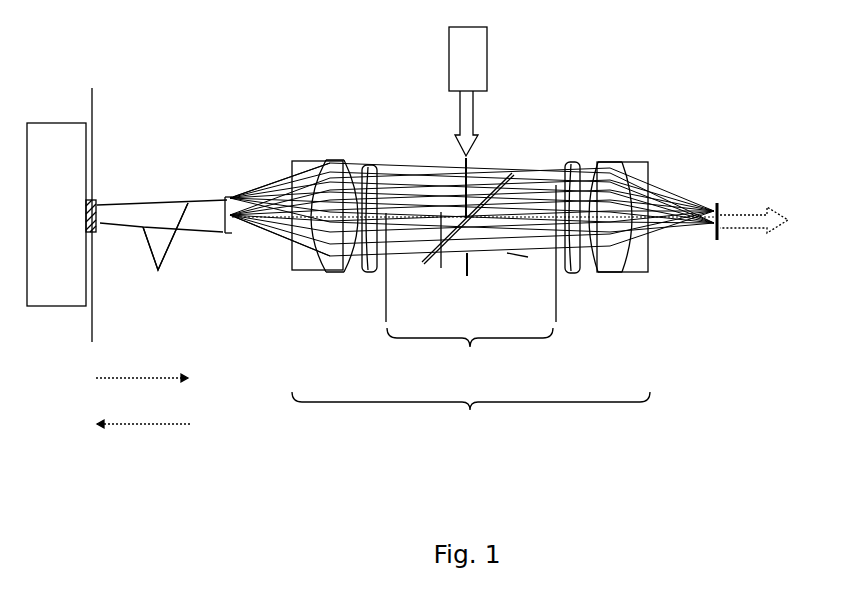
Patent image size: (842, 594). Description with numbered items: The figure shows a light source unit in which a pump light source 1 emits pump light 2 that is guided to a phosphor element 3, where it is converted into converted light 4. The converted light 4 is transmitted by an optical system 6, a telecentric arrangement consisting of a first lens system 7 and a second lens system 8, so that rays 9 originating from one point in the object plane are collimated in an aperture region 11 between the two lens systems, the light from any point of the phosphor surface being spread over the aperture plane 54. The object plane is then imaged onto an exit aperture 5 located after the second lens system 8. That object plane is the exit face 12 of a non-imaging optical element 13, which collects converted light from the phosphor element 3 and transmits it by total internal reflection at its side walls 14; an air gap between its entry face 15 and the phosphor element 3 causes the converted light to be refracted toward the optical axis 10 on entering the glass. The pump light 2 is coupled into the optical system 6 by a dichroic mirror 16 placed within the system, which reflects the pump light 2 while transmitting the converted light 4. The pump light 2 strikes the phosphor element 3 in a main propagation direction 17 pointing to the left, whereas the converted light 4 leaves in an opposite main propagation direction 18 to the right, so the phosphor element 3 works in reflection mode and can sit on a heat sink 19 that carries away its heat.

The pump light source 1 is at (460, 42).
The pump light 2 is at (460, 108).
The phosphor element 3 is at (91, 227).
The converted light 4 is at (262, 228).
The exit aperture 5 is at (721, 242).
The optical system 6 is at (471, 415).
The first lens system 7 is at (368, 165).
The second lens system 8 is at (567, 162).
The rays 9 is at (507, 253).
The optical axis 10 is at (441, 268).
The aperture region 11 is at (471, 283).
The exit face 12 is at (227, 197).
The non-imaging optical element 13 is at (147, 208).
The side walls 14 is at (158, 271).
The entry face 15 is at (94, 200).
The dichroic mirror 16 is at (509, 173).
The main propagation direction of the pump light 17 is at (142, 424).
The main propagation direction of the converted light 18 is at (143, 378).
The heat sink 19 is at (57, 137).
The aperture plane 54 is at (467, 276).